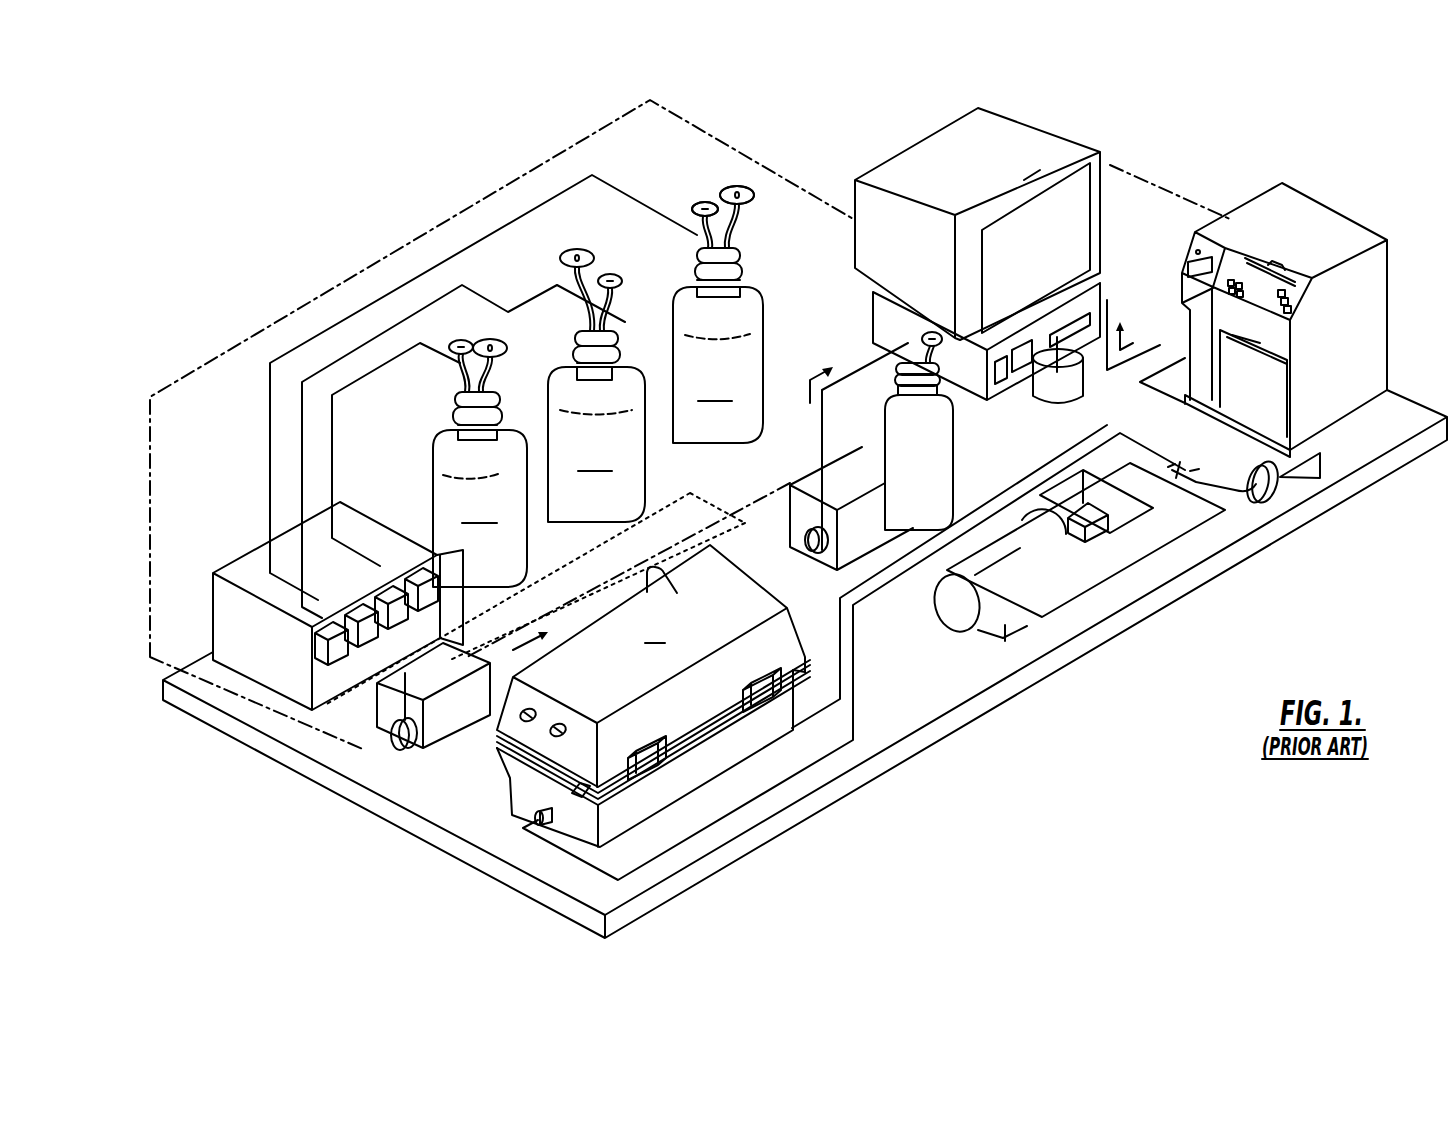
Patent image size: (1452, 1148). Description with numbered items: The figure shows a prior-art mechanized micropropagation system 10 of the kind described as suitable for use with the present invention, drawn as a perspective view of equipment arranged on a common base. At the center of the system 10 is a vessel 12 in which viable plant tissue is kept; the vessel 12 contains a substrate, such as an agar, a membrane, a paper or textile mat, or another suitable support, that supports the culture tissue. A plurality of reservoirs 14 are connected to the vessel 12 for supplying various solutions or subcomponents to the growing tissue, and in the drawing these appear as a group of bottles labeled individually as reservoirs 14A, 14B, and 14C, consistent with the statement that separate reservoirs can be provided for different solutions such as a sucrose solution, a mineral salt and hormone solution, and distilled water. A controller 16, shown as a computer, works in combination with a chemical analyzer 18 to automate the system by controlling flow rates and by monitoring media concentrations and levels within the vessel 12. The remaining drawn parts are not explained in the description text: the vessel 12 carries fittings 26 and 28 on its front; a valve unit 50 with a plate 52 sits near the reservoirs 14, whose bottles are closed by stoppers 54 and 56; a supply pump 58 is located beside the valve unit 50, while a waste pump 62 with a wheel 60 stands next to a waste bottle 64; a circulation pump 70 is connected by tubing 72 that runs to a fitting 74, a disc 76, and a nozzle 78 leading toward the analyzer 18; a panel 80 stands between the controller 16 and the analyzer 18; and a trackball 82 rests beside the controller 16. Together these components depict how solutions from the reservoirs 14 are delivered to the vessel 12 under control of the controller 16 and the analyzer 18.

The micropropagation system 10 is at (691, 425).
The vessel 12 is at (653, 696).
The reservoirs 14 is at (618, 371).
The media bottle 14A is at (480, 463).
The media bottle 14B is at (596, 385).
The media bottle 14C is at (718, 314).
The controller 16 is at (990, 260).
The chemical analyzer 18 is at (1263, 310).
The cassette port knob 26 is at (582, 705).
The cassette port knob 28 is at (549, 688).
The wave box valve unit 50 is at (301, 606).
The sensor plate 52 is at (572, 592).
The bottle stopper 54 is at (688, 186).
The bottle stopper 56 is at (762, 212).
The supply control pump 58 is at (405, 738).
The pump wheel 60 is at (796, 495).
The waste control pump 62 is at (839, 456).
The waste bottle 64 is at (949, 431).
The media circulation pump 70 is at (1076, 568).
The tubing 72 is at (727, 527).
The valve fitting 74 is at (1212, 463).
The sampling disc 76 is at (1300, 500).
The sample nozzle 78 is at (1328, 450).
The connection panel 80 is at (1134, 324).
The trackball 82 is at (1079, 382).